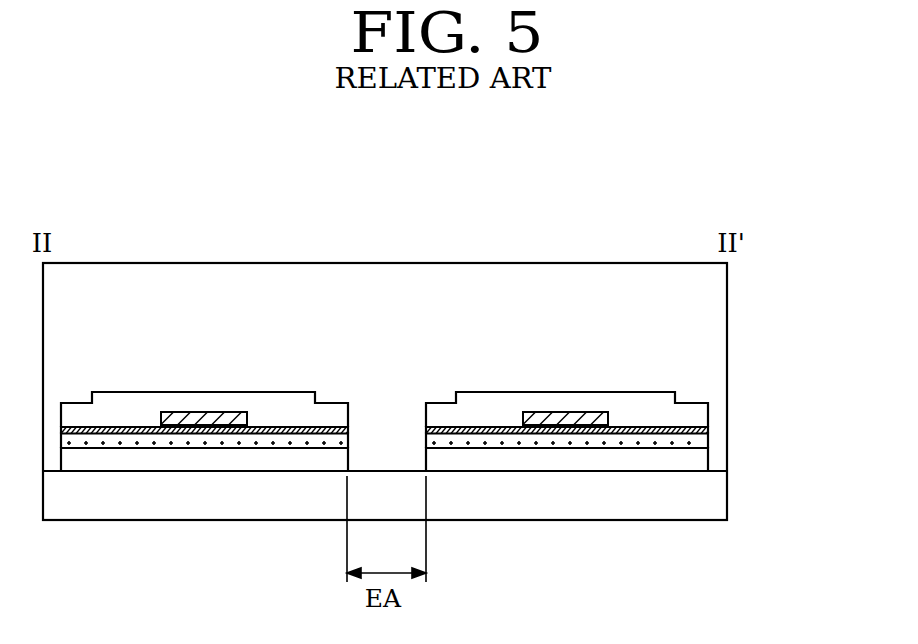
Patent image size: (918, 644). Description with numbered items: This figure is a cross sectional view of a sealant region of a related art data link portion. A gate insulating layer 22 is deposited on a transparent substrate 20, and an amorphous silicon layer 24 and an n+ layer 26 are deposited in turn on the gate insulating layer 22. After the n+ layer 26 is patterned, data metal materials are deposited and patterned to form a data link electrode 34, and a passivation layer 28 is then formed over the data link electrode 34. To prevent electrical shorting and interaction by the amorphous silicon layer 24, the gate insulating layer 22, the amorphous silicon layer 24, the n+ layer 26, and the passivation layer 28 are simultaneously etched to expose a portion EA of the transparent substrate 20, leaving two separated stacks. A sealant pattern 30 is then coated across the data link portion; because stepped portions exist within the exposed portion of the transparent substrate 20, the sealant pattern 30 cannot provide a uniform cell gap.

The transparent substrate 20 is at (715, 508).
The gate insulating layer 22 is at (697, 462).
The amorphous silicon layer 24 is at (700, 442).
The n+ layer 26 is at (705, 431).
The passivation layer 28 is at (668, 400).
The sealant pattern 30 is at (711, 322).
The data link electrode 34 is at (565, 427).